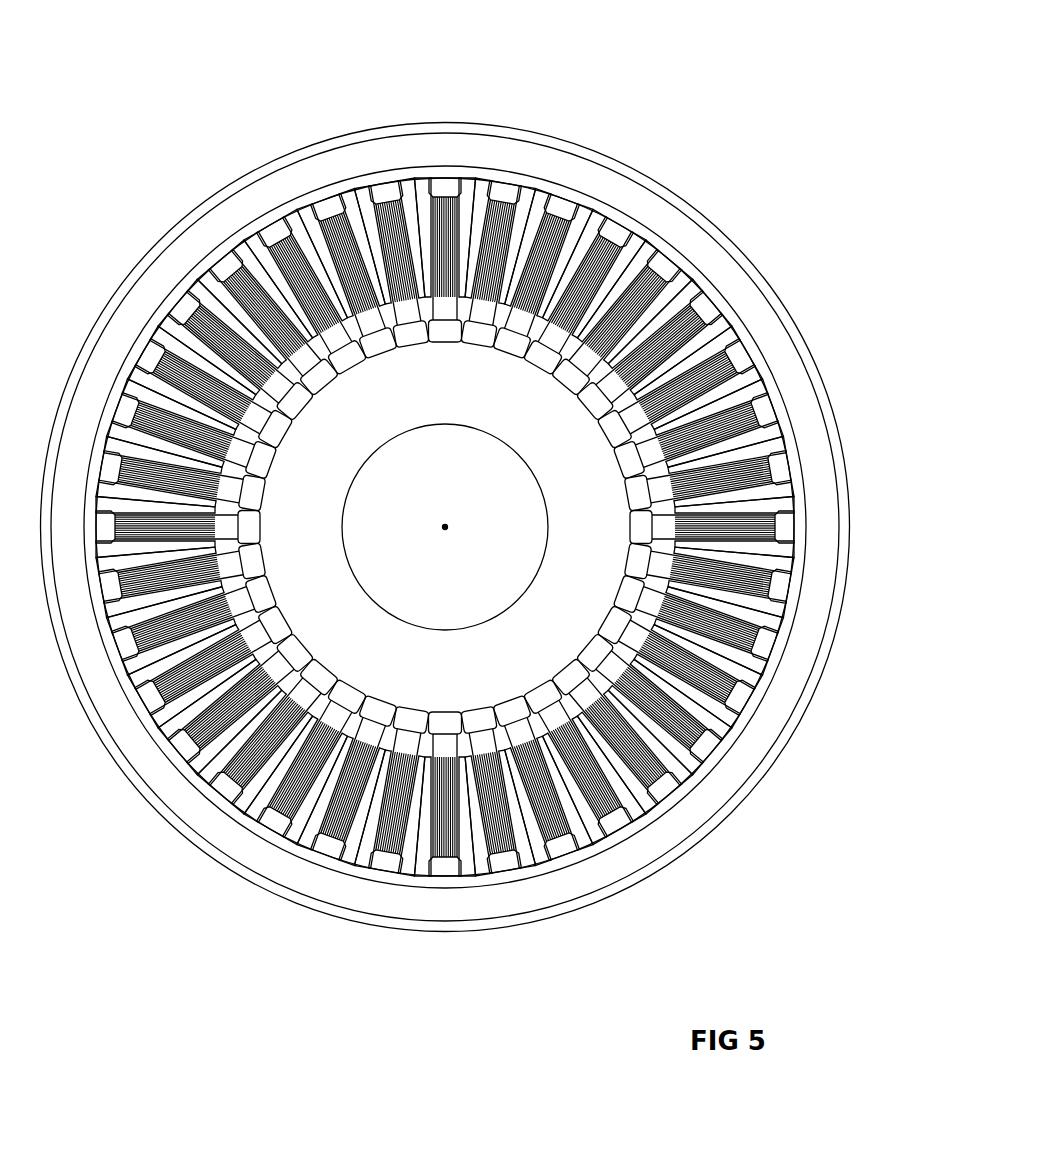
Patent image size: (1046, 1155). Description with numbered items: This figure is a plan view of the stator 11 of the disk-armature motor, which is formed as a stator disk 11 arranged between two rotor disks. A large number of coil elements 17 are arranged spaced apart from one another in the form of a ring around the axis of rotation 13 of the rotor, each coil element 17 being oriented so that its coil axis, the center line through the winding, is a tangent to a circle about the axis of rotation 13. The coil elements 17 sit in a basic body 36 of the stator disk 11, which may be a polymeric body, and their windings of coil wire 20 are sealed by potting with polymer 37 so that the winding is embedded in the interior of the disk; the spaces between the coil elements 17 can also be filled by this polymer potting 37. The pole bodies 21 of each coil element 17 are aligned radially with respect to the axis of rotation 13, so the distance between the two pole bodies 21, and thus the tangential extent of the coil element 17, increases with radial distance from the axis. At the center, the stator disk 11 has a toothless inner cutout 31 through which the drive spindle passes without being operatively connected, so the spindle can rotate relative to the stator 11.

The stator 11 is at (664, 86).
The axis of rotation 13 is at (447, 528).
The coil element 17 is at (499, 191).
The coil wire 20 is at (384, 196).
The pole body 21 is at (448, 185).
The inner cutout 31 is at (497, 497).
The basic body 36 is at (247, 205).
The polymer potting 37 is at (737, 352).